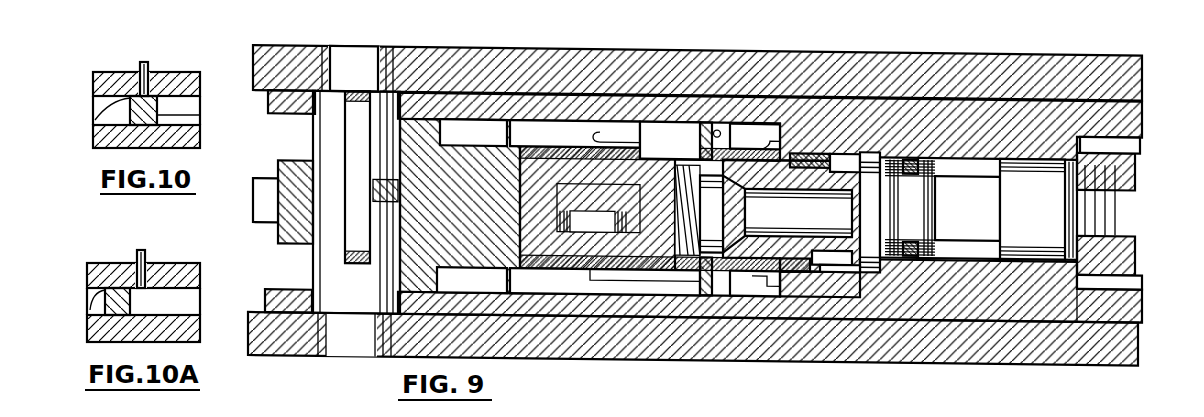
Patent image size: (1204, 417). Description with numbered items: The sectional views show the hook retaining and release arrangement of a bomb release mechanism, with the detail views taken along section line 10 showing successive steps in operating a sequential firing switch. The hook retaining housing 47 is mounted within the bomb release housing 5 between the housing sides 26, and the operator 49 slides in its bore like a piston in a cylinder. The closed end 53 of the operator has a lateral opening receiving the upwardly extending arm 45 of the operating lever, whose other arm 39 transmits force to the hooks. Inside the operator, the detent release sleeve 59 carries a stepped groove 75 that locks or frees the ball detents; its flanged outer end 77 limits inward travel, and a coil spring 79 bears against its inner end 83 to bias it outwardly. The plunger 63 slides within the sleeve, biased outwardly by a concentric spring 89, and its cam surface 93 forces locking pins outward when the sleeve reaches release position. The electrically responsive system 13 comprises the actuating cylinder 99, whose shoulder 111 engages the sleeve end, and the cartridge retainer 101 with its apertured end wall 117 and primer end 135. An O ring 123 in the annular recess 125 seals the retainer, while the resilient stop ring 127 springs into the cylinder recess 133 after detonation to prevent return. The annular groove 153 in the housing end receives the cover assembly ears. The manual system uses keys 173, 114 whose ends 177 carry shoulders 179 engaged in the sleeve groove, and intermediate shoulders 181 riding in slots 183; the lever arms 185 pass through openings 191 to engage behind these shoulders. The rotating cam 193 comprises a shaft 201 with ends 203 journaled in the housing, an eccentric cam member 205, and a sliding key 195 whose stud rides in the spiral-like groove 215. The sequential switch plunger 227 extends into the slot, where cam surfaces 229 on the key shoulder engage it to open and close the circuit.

In FIG. 9, the bomb release housing 5 is at (252, 47).
In FIG. 9, the section line 10— 10 is at (655, 114).
In FIG. 9, the electrically responsive, fluid pressure-operating system 13 is at (967, 260).
In FIG. 9, the bomb release housing sides 26 is at (291, 58).
In FIG. 9, the arm of operating lever 39 is at (266, 226).
In FIG. 9, the arm of operating lever 45 is at (562, 268).
In FIG. 10, the housing 47 is at (93, 87).
In FIG. 10A, the housing 47 is at (87, 277).
In FIG. 9, the housing 47 is at (1142, 112).
In FIG. 9, the operator 49 is at (473, 132).
In FIG. 9, the closed end of operator 53 is at (516, 190).
In FIG. 9, the detent release sleeve 59 is at (824, 268).
In FIG. 9, the inner cylinder or plunger 63 is at (830, 258).
In FIG. 9, the stepped groove 75 is at (790, 265).
In FIG. 9, the outer end of detent release sleeve 77 is at (860, 152).
In FIG. 9, the compression or coil spring 79 is at (688, 266).
In FIG. 9, the end of sleeve 83 is at (790, 272).
In FIG. 9, the compression or coil spring 89 is at (748, 215).
In FIG. 9, the cam surface 93 is at (742, 214).
In FIG. 9, the actuating cylinder or piston 99 is at (996, 145).
In FIG. 9, the cartridge retainer 101 is at (976, 214).
In FIG. 9, the rectangular boss or shoulder 111 is at (870, 265).
In FIG. 9, the key 114 is at (518, 279).
In FIG. 9, the cartridge retainer end wall 117 is at (893, 150).
In FIG. 9, the O ring 123 is at (913, 150).
In FIG. 9, the annular recess 125 is at (910, 250).
In FIG. 9, the resilient stop ring 127 is at (926, 150).
In FIG. 9, the annular recess 133 is at (1046, 262).
In FIG. 9, the end of cartridge retainer 135 is at (1062, 185).
In FIG. 9, the annular groove 153 is at (1106, 280).
In FIG. 9, the key 173 is at (575, 134).
In FIG. 9, the end of key 177 is at (840, 147).
In FIG. 9, the shoulder 179 is at (800, 147).
In FIG. 10, the shoulder 181 is at (190, 116).
In FIG. 10A, the shoulder 181 is at (131, 302).
In FIG. 9, the shoulder 181 is at (730, 120).
In FIG. 9, the slot or groove 183 is at (600, 266).
In FIG. 9, the arms 185 is at (766, 124).
In FIG. 9, the openings 191 is at (628, 291).
In FIG. 9, the rotating cam 193 is at (471, 283).
In FIG. 9, the sliding key 195 is at (360, 264).
In FIG. 9, the shaft 201 is at (328, 136).
In FIG. 9, the ends of shaft 203 is at (366, 54).
In FIG. 9, the cam member 205 is at (412, 135).
In FIG. 9, the spiral-like groove 215 is at (405, 202).
In FIG. 10, the spring biased plunger 227 is at (144, 62).
In FIG. 10A, the spring biased plunger 227 is at (143, 250).
In FIG. 9, the spring biased plunger 227 is at (707, 118).
In FIG. 10, the cam surfaces 229 is at (95, 120).
In FIG. 10A, the cam surfaces 229 is at (95, 292).